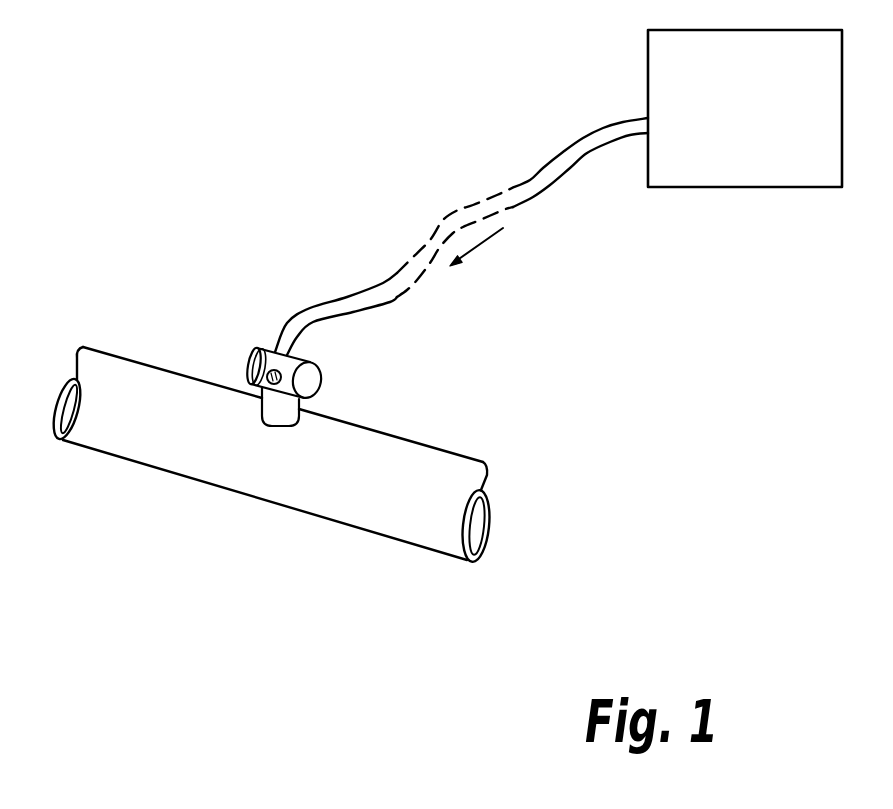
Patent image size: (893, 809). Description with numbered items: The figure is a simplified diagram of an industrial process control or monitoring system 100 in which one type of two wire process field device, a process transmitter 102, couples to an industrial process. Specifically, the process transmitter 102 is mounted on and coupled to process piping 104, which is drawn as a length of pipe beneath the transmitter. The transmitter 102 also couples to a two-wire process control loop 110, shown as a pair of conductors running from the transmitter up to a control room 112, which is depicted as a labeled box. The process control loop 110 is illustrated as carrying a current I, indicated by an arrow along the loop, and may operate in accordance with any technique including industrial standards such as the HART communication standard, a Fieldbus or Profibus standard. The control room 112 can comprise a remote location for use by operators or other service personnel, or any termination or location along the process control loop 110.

The industrial process control or monitoring system 100 is at (318, 230).
The process transmitter 102 is at (271, 366).
The process piping 104 is at (307, 513).
The two-wire process control loop 110 is at (357, 313).
The control room 112 is at (683, 187).